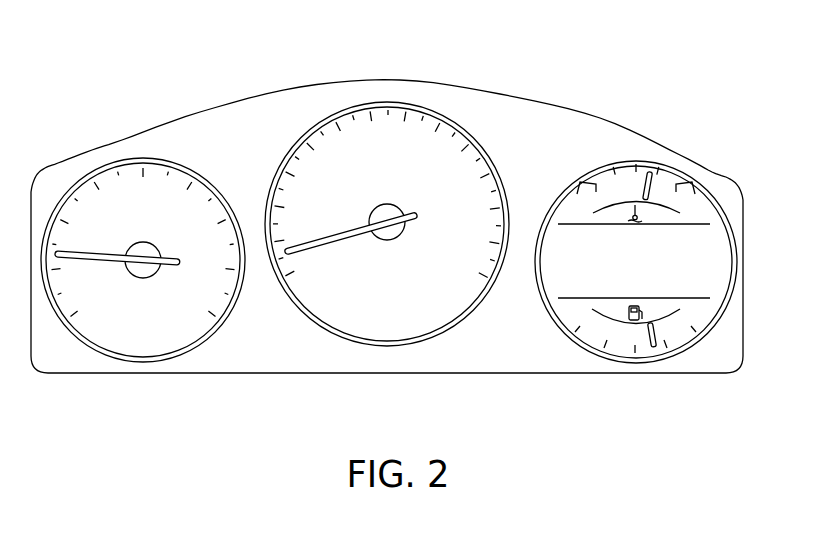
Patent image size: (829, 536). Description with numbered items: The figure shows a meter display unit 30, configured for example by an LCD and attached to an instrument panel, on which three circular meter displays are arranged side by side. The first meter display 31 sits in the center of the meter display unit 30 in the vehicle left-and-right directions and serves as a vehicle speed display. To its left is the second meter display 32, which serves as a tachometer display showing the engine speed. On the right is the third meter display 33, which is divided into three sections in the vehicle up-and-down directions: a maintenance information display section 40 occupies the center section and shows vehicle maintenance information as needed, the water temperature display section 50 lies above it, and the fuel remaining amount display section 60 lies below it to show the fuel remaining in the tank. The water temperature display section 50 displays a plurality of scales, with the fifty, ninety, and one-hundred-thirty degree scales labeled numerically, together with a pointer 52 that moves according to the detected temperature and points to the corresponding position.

The meter display unit 30 is at (541, 97).
The first meter display 31 is at (390, 100).
The second meter display 32 is at (125, 159).
The third meter display 33 is at (653, 232).
The maintenance information display section 40 is at (709, 258).
The water temperature display section 50 is at (674, 176).
The pointer 52 is at (658, 191).
The fuel remaining amount display section 60 is at (682, 337).